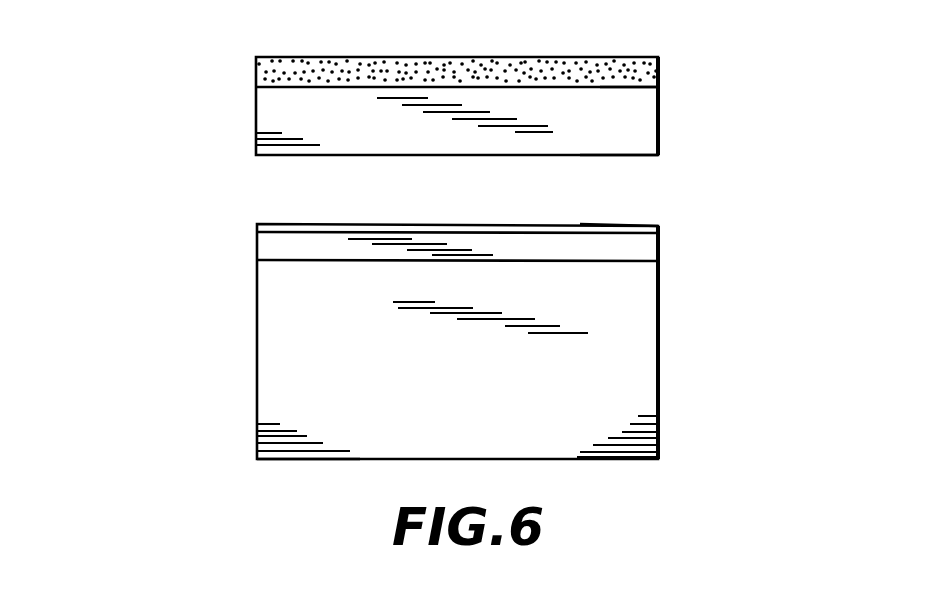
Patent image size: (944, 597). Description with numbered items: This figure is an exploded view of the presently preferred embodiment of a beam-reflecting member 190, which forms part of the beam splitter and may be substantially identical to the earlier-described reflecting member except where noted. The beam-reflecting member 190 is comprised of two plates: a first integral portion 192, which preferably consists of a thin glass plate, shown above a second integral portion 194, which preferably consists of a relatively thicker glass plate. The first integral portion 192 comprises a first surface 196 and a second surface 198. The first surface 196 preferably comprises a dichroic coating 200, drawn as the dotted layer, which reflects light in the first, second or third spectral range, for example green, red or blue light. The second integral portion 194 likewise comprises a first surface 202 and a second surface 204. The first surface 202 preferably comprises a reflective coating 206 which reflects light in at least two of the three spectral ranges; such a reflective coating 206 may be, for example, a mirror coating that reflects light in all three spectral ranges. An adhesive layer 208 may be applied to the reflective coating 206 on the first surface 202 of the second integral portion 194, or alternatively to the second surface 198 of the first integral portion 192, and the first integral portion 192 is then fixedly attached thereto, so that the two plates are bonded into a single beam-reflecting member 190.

The beam-reflecting member 190 is at (188, 87).
The first integral portion 192 is at (645, 127).
The second integral portion 194 is at (638, 382).
The first surface 196 is at (632, 90).
The second surface 198 is at (635, 158).
The dichroic coating 200 is at (408, 57).
The first surface 202 is at (281, 229).
The second surface 204 is at (317, 461).
The reflective coating 206 is at (264, 245).
The adhesive layer 208 is at (660, 229).